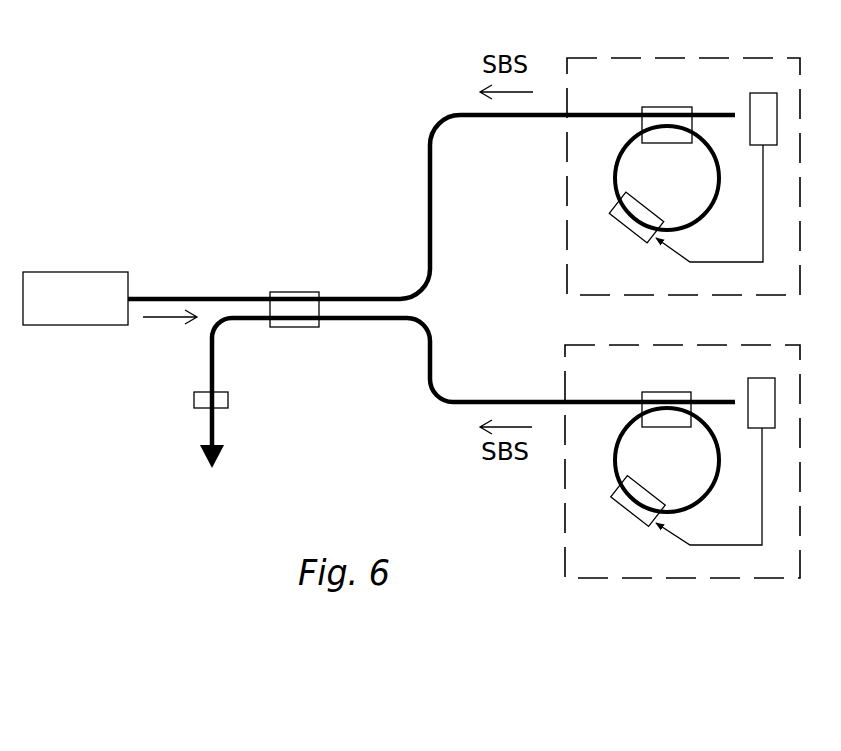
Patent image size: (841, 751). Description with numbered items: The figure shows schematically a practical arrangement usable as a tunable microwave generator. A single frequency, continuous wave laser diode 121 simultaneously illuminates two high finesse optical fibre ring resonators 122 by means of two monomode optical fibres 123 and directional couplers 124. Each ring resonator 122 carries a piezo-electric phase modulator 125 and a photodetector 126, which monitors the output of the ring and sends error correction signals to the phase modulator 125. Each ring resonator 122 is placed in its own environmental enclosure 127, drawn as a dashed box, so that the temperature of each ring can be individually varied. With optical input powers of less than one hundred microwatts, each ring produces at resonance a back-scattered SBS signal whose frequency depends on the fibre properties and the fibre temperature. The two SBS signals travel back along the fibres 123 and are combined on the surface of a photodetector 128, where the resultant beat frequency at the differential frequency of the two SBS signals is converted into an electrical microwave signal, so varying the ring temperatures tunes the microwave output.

The laser diode 121 is at (88, 270).
The optical fibre ring resonator 122 is at (712, 210).
The monomode optical fibre 123 is at (200, 296).
The directional coupler 124 is at (298, 290).
The piezo-electric phase modulator 125 is at (622, 232).
The photodetector 126 is at (765, 92).
The environmental enclosure 127 is at (630, 55).
The photodetector 128 is at (192, 400).